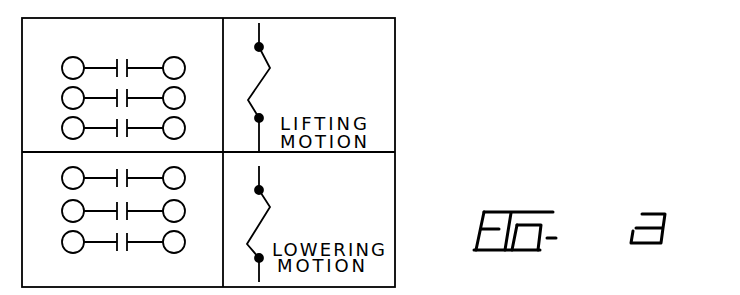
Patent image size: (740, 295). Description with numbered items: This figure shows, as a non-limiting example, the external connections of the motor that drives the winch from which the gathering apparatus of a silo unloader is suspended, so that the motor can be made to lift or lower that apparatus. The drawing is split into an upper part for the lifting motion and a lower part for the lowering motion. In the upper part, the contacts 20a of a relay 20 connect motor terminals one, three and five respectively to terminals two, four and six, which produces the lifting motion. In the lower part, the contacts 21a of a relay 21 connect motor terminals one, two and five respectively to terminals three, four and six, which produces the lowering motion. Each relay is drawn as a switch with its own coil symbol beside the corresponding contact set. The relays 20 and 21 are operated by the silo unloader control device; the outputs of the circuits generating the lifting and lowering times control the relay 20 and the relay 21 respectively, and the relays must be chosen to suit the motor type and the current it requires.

The relay 20 is at (263, 80).
The contacts of relay 20a is at (123, 57).
The relay 21 is at (264, 222).
The contacts of relay 21a is at (121, 256).